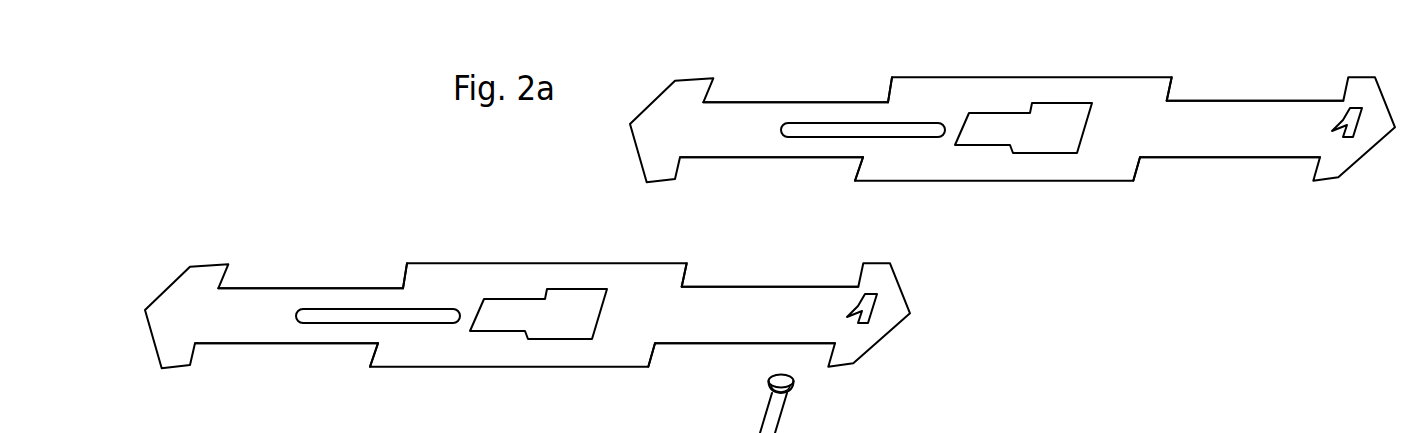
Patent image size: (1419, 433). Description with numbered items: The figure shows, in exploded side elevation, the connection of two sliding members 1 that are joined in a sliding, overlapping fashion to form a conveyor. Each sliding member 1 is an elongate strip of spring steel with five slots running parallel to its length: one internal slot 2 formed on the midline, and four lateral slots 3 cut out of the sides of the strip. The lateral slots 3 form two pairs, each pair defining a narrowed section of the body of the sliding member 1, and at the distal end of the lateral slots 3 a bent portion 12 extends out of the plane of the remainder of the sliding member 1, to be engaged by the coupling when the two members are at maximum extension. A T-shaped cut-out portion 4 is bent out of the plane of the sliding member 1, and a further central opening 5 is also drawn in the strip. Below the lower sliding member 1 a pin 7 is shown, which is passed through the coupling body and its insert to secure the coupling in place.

The sliding member 1 is at (873, 273).
The internal slot 2 is at (805, 132).
The lateral slot 3 is at (330, 287).
The T-shaped cut-out portion 4 is at (868, 308).
The central opening 5 is at (553, 322).
The pin 7 is at (775, 413).
The bent portion 12 is at (398, 273).